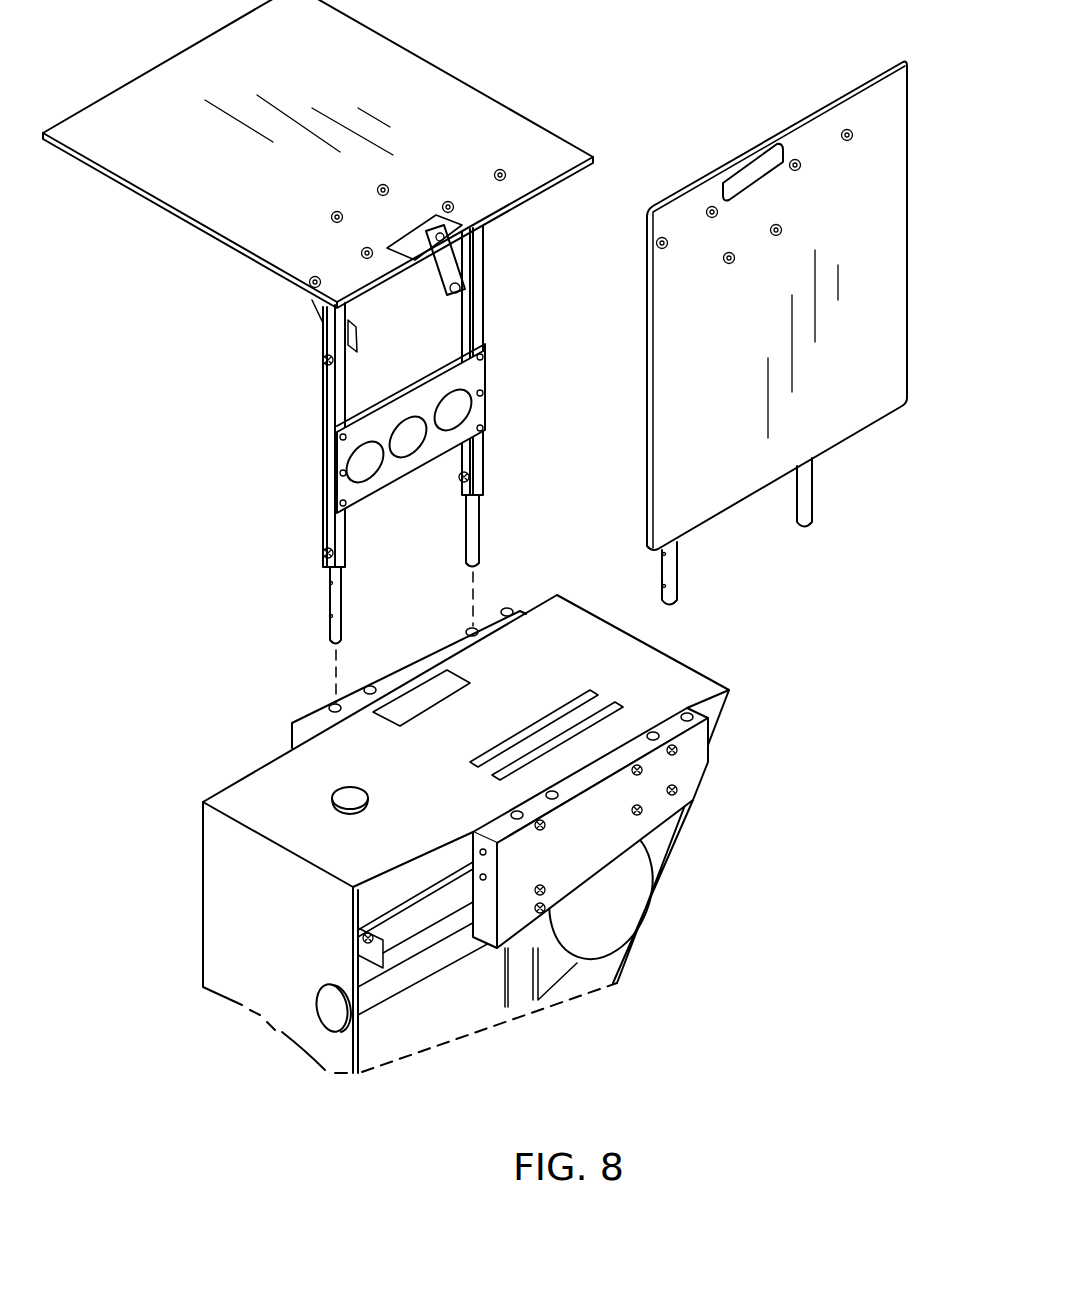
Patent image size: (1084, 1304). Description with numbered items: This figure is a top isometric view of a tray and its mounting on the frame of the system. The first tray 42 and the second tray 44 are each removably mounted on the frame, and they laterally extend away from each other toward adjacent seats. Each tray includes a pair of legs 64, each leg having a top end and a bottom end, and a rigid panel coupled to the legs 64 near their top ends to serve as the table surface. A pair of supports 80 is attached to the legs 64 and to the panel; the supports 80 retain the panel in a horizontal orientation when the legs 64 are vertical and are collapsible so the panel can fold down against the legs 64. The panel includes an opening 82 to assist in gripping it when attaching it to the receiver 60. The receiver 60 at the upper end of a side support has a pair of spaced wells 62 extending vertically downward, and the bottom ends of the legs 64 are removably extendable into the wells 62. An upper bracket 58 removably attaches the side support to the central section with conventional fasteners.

The first tray 42 is at (277, 350).
The second tray 44 is at (830, 468).
The upper bracket 58 is at (400, 912).
The receiver 60 is at (313, 708).
The wells 62 is at (333, 707).
The legs 64 is at (520, 813).
The supports 80 is at (433, 264).
The opening 82 is at (752, 172).